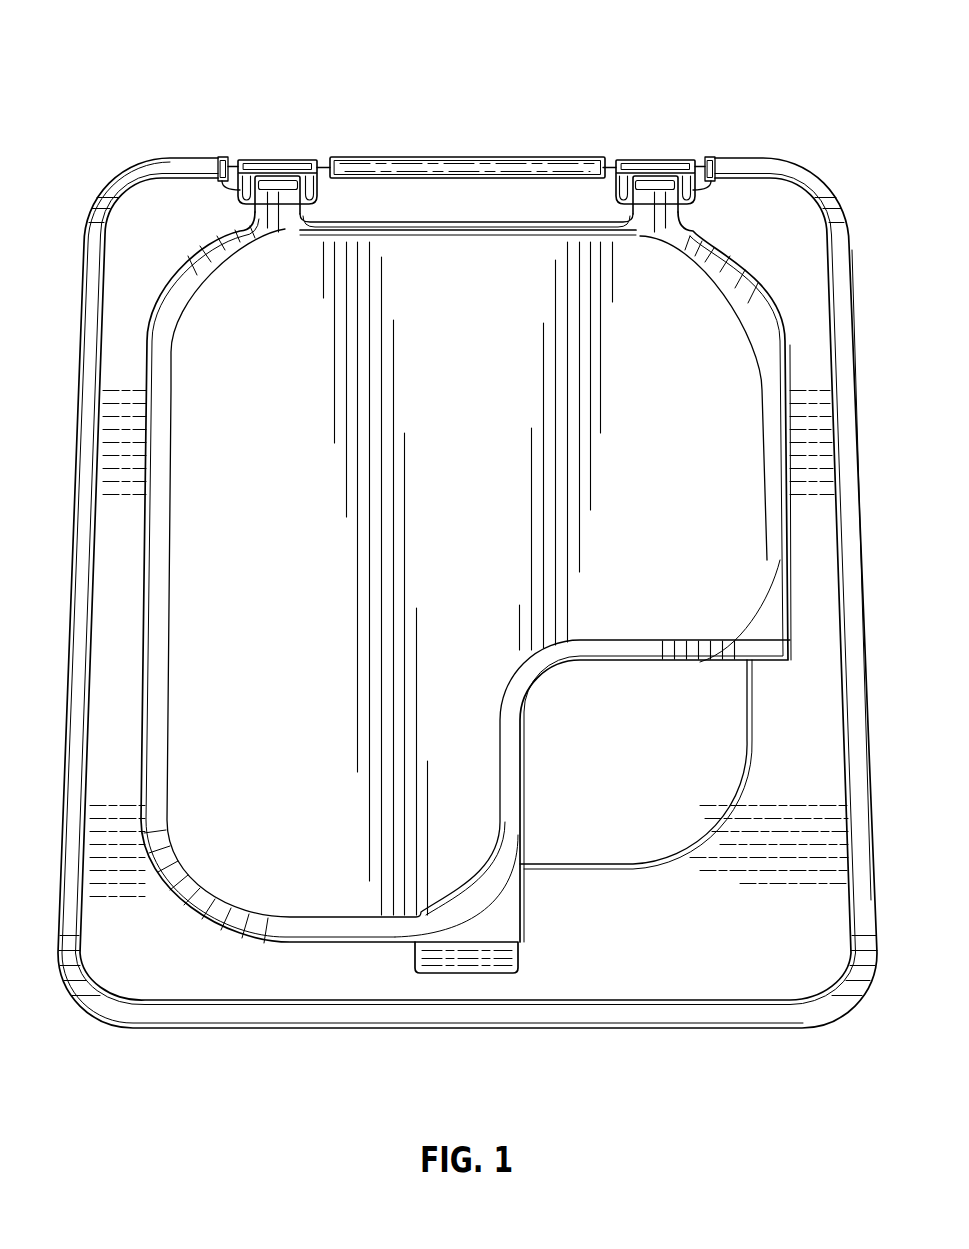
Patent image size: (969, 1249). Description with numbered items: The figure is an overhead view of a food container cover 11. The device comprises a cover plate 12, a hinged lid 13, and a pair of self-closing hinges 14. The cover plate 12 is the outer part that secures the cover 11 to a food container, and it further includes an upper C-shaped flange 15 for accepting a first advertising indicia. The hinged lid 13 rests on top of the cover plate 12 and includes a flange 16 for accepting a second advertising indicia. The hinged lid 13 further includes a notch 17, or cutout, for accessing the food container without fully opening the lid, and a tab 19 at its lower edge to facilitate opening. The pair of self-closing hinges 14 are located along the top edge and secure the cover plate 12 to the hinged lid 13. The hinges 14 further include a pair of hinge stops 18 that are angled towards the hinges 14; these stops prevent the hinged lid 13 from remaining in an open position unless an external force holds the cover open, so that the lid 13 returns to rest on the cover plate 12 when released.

The food container cover 11 is at (808, 66).
The cover plate 12 is at (86, 487).
The hinged lid 13 is at (143, 588).
The self-closing hinges 14 is at (224, 186).
The upper C-shaped flange 15 is at (86, 910).
The flange 16 is at (167, 510).
The notch 17 is at (530, 690).
The hinge stops 18 is at (268, 160).
The tab 19 is at (522, 946).